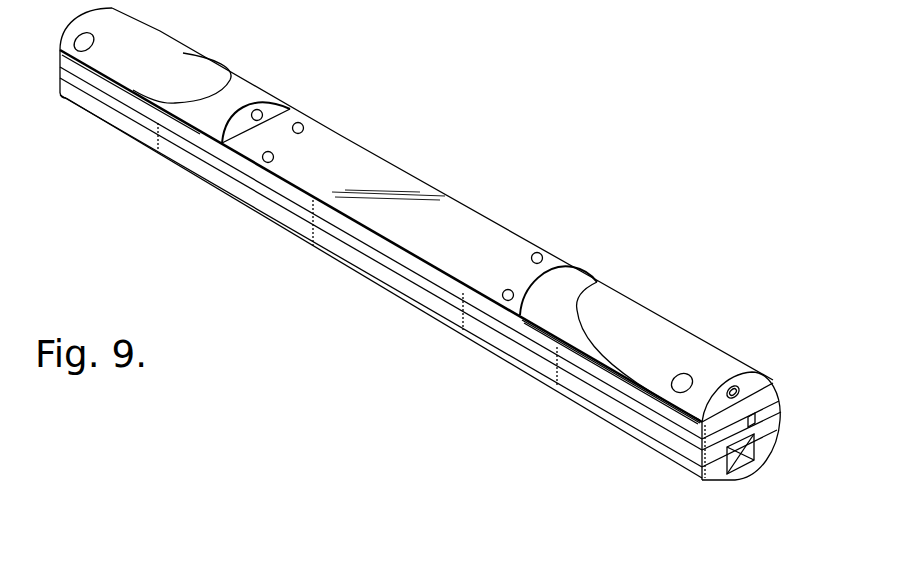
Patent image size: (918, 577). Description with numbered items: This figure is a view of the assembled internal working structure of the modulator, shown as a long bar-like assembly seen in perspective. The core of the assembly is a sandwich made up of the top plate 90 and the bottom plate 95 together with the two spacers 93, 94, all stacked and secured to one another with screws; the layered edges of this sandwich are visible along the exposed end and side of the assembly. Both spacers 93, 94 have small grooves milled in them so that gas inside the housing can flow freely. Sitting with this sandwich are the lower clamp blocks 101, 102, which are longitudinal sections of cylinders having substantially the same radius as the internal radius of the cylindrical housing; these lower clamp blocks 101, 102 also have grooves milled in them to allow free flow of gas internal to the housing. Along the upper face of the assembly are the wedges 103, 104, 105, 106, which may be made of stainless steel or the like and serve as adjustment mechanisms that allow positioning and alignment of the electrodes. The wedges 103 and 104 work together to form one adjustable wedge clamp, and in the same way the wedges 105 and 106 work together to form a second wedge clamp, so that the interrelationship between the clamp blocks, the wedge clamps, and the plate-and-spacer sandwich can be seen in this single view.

The top plate 90 is at (765, 428).
The spacer 93 is at (777, 407).
The bottom plate 95 is at (767, 395).
The spacer 94 is at (682, 437).
The lower clamp block 101 is at (720, 475).
The lower clamp block 102 is at (210, 187).
The wedge 103 is at (697, 347).
The wedge 104 is at (582, 280).
The wedge 105 is at (172, 52).
The wedge 106 is at (252, 90).